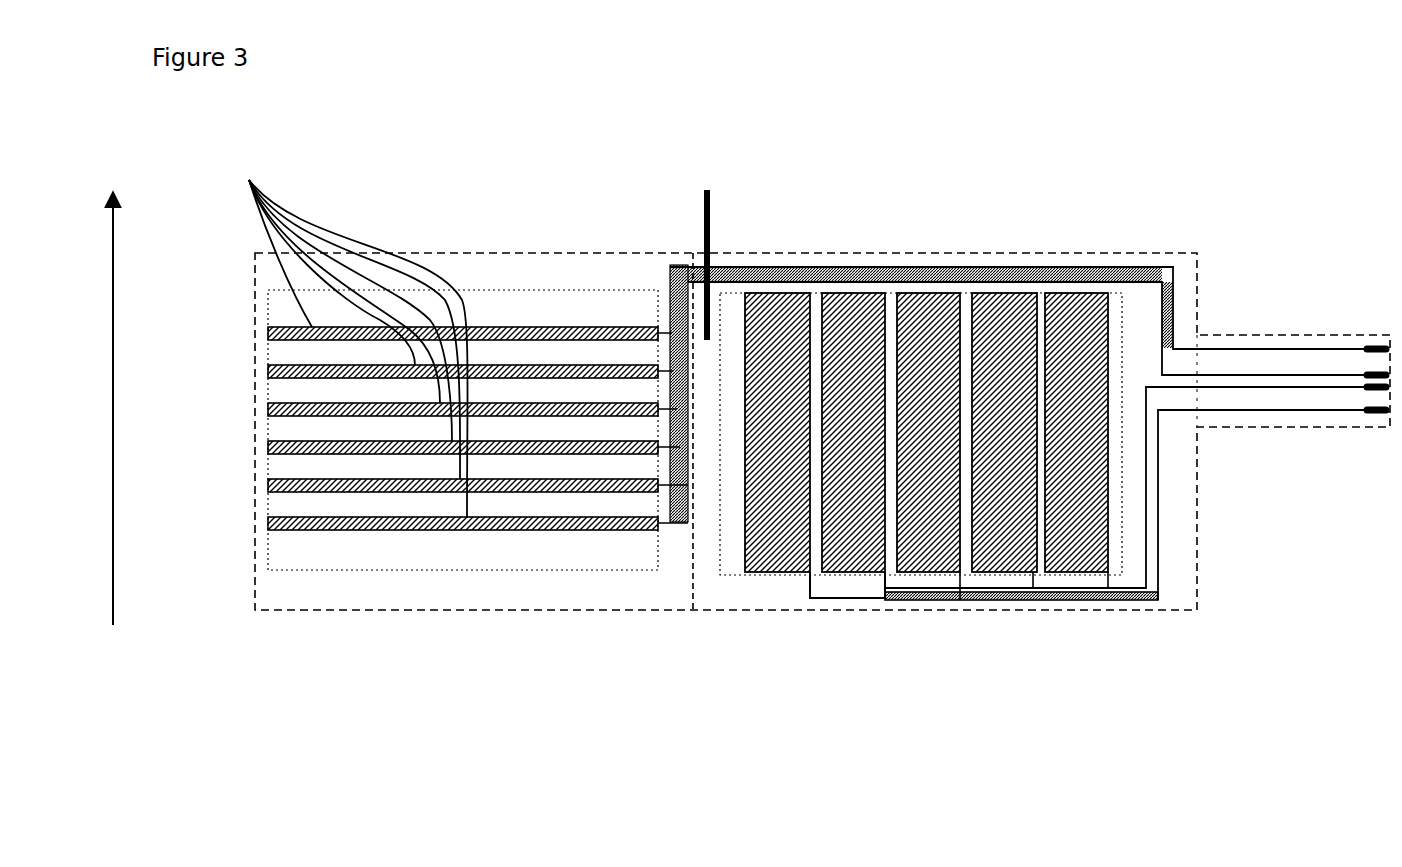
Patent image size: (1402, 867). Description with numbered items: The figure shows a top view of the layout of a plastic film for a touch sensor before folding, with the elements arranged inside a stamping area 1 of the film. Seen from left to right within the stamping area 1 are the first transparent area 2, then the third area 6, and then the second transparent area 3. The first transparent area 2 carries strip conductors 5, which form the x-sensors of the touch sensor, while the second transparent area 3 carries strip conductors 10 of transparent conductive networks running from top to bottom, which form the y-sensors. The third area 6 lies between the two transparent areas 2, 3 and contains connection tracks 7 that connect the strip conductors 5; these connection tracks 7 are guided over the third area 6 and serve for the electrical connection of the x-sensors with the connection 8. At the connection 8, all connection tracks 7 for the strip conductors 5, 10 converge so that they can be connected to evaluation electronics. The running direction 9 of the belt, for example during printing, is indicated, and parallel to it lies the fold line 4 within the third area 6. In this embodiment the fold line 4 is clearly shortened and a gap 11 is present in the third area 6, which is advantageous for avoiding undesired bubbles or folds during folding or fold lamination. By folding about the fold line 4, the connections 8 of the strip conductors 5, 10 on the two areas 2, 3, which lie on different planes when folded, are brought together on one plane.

The stamping area 1 is at (727, 253).
The first transparent area 2 is at (468, 300).
The second transparent area 3 is at (932, 255).
The fold line 4 is at (707, 192).
The strip conductors 5 is at (250, 186).
The third area 6 is at (687, 425).
The connection tracks 7 is at (998, 599).
The connection 8 is at (1371, 447).
The running direction 9 is at (135, 408).
The strip conductors 10 is at (1073, 265).
The gap 11 is at (705, 584).